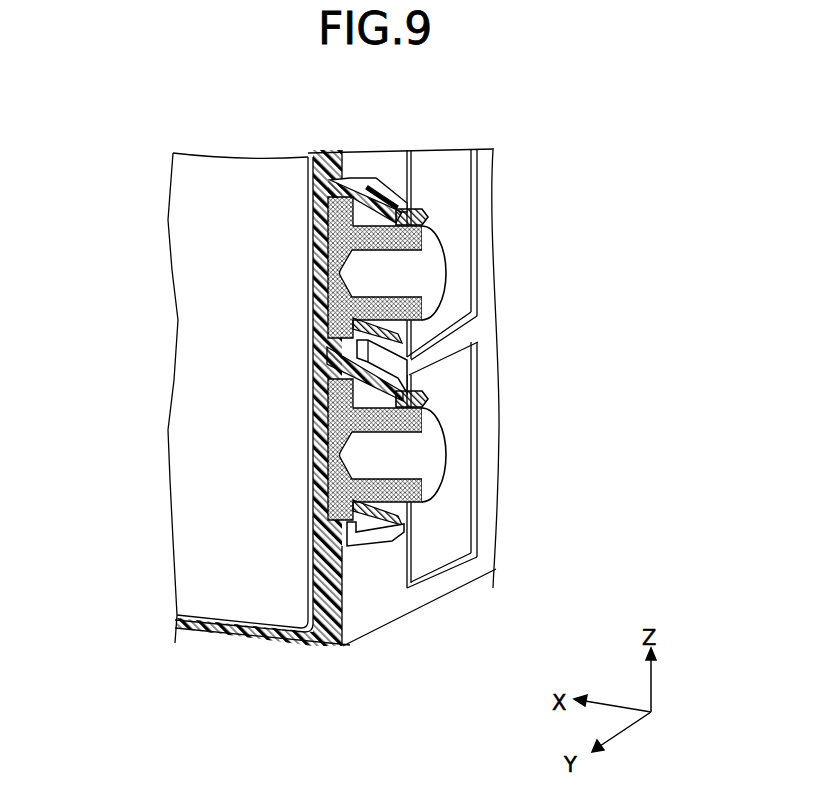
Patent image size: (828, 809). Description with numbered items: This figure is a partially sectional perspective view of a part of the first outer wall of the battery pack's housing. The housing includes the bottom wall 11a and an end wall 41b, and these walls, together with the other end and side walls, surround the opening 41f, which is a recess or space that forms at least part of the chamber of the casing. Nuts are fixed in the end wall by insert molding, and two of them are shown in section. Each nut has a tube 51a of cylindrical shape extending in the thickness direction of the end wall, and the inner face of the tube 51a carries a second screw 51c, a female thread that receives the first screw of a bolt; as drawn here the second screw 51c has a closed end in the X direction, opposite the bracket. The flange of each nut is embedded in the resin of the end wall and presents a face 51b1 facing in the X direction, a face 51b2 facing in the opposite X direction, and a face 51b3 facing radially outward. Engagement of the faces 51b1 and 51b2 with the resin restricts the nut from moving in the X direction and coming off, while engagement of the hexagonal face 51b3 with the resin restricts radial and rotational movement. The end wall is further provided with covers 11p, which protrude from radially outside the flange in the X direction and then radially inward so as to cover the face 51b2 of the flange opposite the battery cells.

The opening 41f is at (307, 525).
The bottom wall 11a is at (203, 633).
The end wall 41b is at (385, 568).
The face of the flange 51b1 is at (330, 205).
The face of the flange 51b2 is at (345, 236).
The face of the flange 51b3 is at (345, 195).
The second screw 51c is at (418, 283).
The tube 51a is at (430, 248).
The cover 11p is at (426, 218).